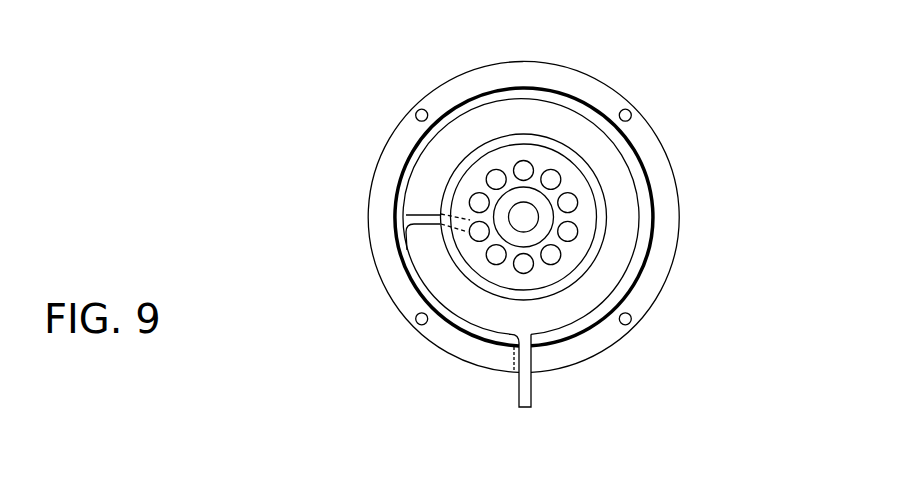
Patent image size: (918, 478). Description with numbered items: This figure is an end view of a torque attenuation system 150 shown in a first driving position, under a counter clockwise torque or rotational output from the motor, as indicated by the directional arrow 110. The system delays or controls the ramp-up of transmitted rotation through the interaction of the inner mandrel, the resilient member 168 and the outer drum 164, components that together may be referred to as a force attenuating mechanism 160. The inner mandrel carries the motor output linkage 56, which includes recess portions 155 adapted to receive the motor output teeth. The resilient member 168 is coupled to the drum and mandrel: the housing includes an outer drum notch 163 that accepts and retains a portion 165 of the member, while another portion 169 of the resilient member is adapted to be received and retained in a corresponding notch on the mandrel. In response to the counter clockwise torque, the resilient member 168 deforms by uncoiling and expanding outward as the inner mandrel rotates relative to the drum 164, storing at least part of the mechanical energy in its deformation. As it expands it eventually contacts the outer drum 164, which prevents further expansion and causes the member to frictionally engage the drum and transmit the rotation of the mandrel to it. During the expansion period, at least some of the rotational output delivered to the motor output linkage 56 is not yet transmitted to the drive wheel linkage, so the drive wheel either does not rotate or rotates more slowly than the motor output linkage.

The torque attenuation system 150 is at (298, 81).
The directional arrow 110 is at (470, 184).
The outer drum 164 is at (550, 86).
The resilient member 168 is at (590, 101).
The recess portions 155 is at (556, 176).
The motor output linkage 56 is at (618, 203).
The force attenuating mechanism 160 is at (755, 212).
The portion of the resilient member 169 is at (425, 215).
The portion of the resilient member 165 is at (528, 388).
The outer drum notch 163 is at (512, 382).